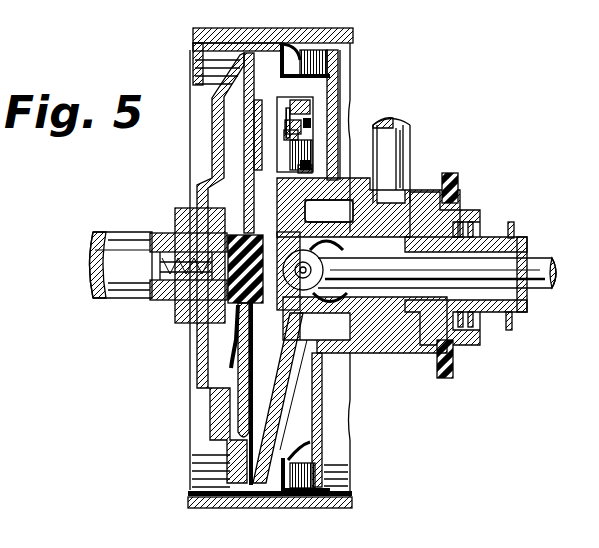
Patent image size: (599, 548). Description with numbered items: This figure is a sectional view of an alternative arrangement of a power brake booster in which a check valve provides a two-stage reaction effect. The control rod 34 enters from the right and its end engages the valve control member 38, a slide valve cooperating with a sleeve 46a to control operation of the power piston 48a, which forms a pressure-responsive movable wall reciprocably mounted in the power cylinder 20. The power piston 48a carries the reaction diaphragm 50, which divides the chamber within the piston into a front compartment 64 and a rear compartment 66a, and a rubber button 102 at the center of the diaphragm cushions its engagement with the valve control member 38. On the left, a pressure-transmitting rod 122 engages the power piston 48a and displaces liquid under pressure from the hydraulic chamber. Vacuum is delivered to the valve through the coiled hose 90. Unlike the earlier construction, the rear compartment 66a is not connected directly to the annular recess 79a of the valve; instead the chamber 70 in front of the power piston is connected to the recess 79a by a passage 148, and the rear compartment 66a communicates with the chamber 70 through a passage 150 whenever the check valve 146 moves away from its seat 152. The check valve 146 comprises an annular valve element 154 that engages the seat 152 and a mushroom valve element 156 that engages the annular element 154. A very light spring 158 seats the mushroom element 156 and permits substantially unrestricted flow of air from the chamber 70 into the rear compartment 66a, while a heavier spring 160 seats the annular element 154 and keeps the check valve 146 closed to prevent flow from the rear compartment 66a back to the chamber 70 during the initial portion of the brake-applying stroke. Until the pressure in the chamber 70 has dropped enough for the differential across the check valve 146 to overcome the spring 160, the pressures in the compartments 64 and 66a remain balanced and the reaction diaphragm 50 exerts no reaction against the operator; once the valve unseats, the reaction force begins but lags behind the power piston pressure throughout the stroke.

The power cylinder 20 is at (322, 508).
The control rod 34 is at (527, 270).
The valve control member 38 is at (483, 322).
The sleeve 46a is at (440, 230).
The power piston 48a is at (327, 29).
The reaction diaphragm 50 is at (237, 192).
The front compartment 64 is at (197, 348).
The rear compartment 66a is at (263, 402).
The chamber 70 is at (200, 437).
The annular recess 79a is at (353, 350).
The coiled hose 90 is at (392, 155).
The rubber button 102 is at (227, 287).
The pressure-transmitting rod 122 is at (105, 292).
The check valve 146 is at (297, 113).
The passage 148 is at (280, 423).
The passage 150 is at (272, 62).
The valve seat 152 is at (280, 157).
The annular valve element 154 is at (290, 117).
The mushroom valve element 156 is at (290, 137).
The light spring 158 is at (307, 123).
The heavier spring 160 is at (307, 167).